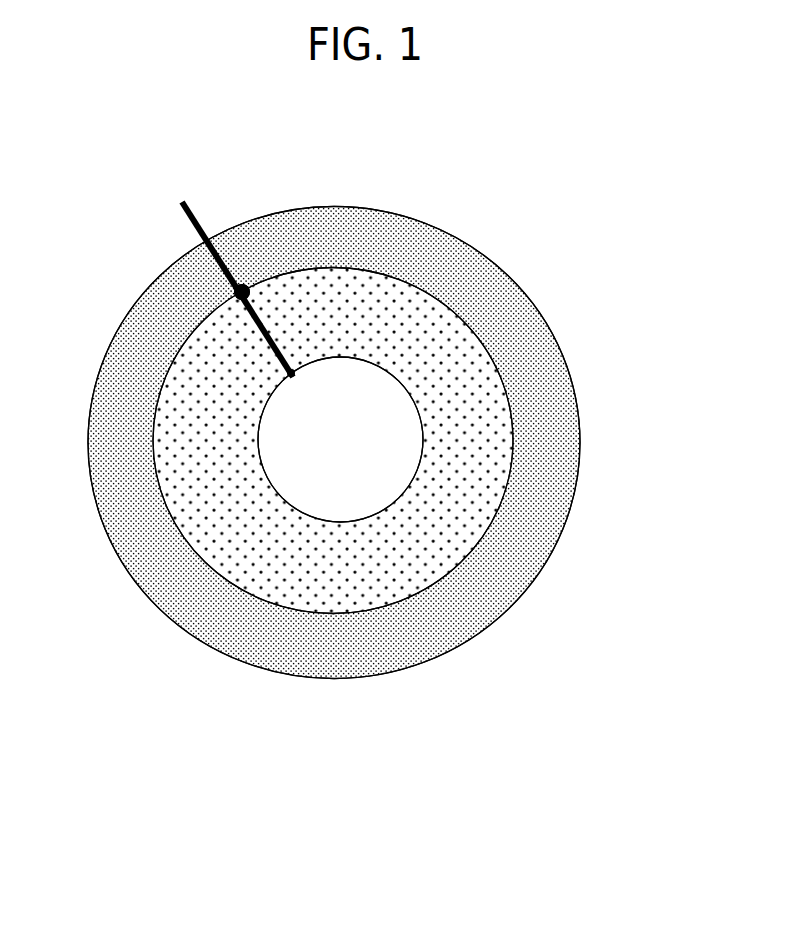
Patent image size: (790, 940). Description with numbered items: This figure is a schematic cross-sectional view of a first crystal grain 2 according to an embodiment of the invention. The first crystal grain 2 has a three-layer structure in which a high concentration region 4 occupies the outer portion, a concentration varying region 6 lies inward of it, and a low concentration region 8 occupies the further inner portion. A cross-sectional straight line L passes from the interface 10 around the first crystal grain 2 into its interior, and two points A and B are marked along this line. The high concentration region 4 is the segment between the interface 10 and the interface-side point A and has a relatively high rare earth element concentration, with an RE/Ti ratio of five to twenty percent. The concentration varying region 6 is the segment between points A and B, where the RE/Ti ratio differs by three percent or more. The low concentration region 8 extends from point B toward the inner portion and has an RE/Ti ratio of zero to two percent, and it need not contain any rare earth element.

The first crystal grain 2 is at (332, 780).
The high concentration region 4 is at (485, 277).
The concentration varying region 6 is at (485, 400).
The low concentration region 8 is at (363, 467).
The interface 10 is at (240, 287).
The interface-side point A is at (242, 292).
The second point B is at (295, 362).
The cross-sectional straight line L is at (190, 222).